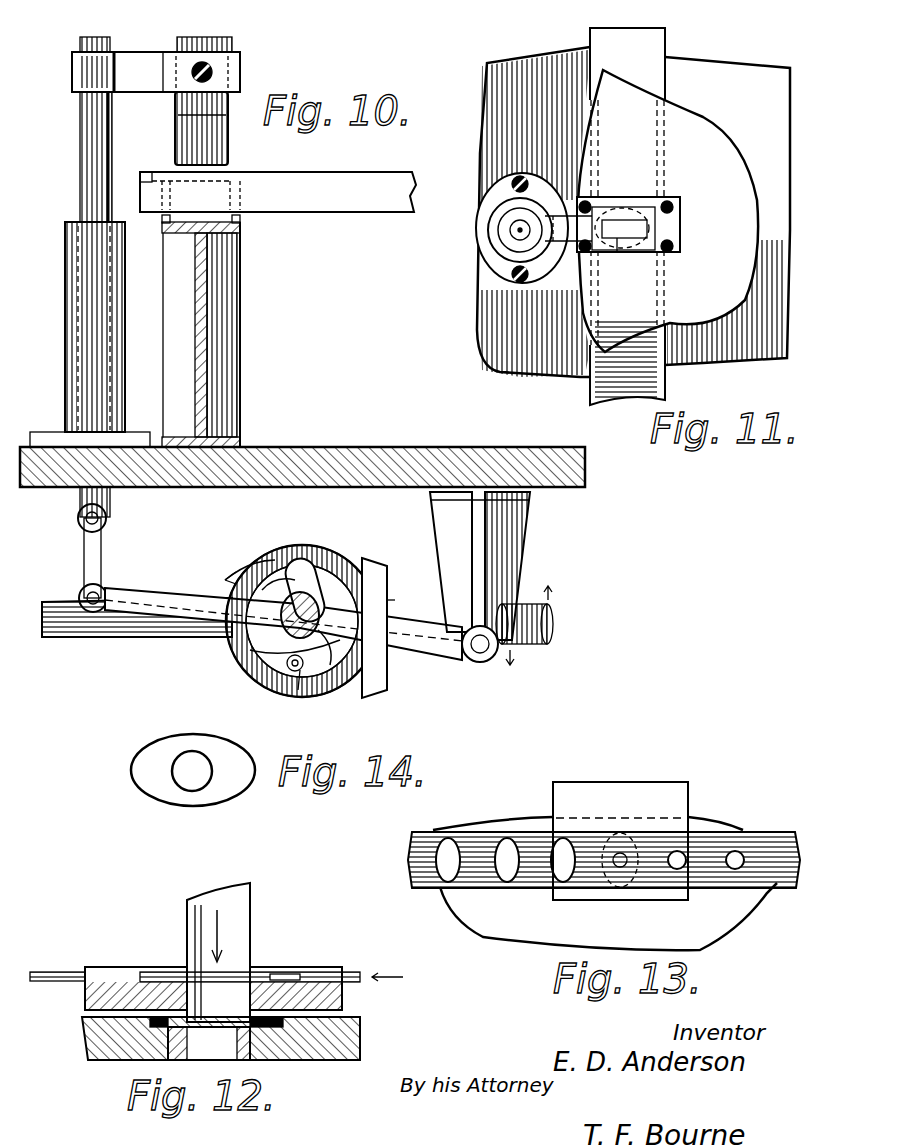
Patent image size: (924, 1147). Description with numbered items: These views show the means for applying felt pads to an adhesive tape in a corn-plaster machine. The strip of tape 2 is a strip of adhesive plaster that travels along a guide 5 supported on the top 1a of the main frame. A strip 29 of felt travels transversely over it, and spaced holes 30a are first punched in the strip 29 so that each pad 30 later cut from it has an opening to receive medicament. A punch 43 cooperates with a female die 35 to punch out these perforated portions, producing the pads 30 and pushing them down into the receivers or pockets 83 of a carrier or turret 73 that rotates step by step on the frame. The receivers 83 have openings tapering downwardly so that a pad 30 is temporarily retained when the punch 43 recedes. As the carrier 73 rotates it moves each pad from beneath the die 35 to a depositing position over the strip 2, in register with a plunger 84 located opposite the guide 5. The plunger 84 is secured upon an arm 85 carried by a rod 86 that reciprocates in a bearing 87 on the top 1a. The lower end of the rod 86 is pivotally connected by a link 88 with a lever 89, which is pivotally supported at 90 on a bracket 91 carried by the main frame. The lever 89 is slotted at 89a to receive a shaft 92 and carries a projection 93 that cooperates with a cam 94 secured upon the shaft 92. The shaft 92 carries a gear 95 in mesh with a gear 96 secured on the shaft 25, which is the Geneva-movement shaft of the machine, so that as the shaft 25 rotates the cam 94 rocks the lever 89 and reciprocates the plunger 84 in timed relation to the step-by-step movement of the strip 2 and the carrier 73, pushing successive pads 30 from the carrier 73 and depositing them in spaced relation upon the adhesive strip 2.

In FIG. 10, the top of main frame 1a is at (397, 452).
In FIG. 11, the top of main frame 1a is at (633, 212).
In FIG. 10, the strip of tape 2 is at (240, 242).
In FIG. 10, the guide 5 is at (185, 240).
In FIG. 11, the guide 5 is at (640, 386).
In FIG. 10, the shaft 25 is at (550, 630).
In FIG. 13, the strip of felt material 29 is at (436, 832).
In FIG. 12, the strip of felt material 29 is at (357, 973).
In FIG. 10, the pad 30 is at (137, 617).
In FIG. 14, the pad 30 is at (164, 752).
In FIG. 13, the pad 30 is at (620, 860).
In FIG. 12, the pad 30 is at (206, 1042).
In FIG. 14, the hole 30a is at (200, 762).
In FIG. 13, the hole 30a is at (738, 853).
In FIG. 12, the hole 30a is at (310, 977).
In FIG. 13, the female die 35 is at (550, 893).
In FIG. 12, the female die 35 is at (333, 998).
In FIG. 12, the punch 43 is at (238, 917).
In FIG. 10, the carrier or turret 73 is at (278, 192).
In FIG. 11, the carrier or turret 73 is at (720, 218).
In FIG. 13, the carrier or turret 73 is at (605, 883).
In FIG. 12, the carrier or turret 73 is at (340, 1034).
In FIG. 10, the receiver or pocket 83 is at (237, 196).
In FIG. 11, the receiver or pocket 83 is at (682, 242).
In FIG. 12, the receiver or pocket 83 is at (167, 1057).
In FIG. 10, the plunger 84 is at (180, 143).
In FIG. 11, the plunger 84 is at (618, 218).
In FIG. 10, the arm 85 is at (143, 57).
In FIG. 10, the rod 86 is at (80, 153).
In FIG. 11, the rod 86 is at (505, 236).
In FIG. 10, the bearing 87 is at (65, 300).
In FIG. 11, the bearing 87 is at (508, 252).
In FIG. 10, the link 88 is at (100, 560).
In FIG. 10, the lever 89 is at (190, 580).
In FIG. 10, the slot 89a is at (320, 587).
In FIG. 10, the pivot 90 is at (497, 658).
In FIG. 10, the bracket 91 is at (516, 570).
In FIG. 10, the shaft 92 is at (262, 648).
In FIG. 10, the projection 93 is at (310, 688).
In FIG. 10, the cam 94 is at (297, 692).
In FIG. 10, the gear 95 is at (340, 668).
In FIG. 10, the gear 96 is at (368, 572).